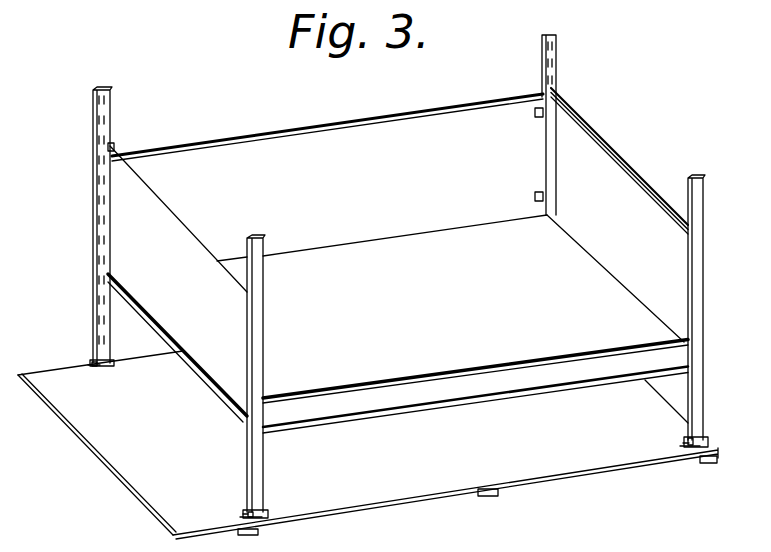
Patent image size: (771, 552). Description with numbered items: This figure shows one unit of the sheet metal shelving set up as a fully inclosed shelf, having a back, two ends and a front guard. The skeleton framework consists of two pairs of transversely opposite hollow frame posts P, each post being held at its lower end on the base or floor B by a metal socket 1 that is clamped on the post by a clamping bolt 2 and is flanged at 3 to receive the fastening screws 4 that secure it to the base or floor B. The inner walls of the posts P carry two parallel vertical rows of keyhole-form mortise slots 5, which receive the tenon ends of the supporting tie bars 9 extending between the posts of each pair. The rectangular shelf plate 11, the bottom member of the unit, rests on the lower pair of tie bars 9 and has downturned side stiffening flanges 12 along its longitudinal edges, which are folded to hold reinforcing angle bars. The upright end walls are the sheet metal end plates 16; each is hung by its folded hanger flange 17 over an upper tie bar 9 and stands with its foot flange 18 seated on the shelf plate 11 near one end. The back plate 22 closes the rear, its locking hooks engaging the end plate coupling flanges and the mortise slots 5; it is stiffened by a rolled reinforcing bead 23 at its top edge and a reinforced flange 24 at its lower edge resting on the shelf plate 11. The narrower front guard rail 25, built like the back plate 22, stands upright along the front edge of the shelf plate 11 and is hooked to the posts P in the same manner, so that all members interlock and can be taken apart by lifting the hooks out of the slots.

The metal socket 1 is at (112, 358).
The clamping bolt 2 is at (104, 369).
The flange 3 is at (91, 367).
The fastening screws 4 is at (246, 512).
The mortise slots 5 is at (98, 117).
The supporting tie bars 9 is at (600, 153).
The shelf plate 11 is at (539, 278).
The side stiffening flanges 12 is at (192, 383).
The end plates 16 is at (376, 283).
The hanger flange 17 is at (180, 220).
The foot flange 18 is at (576, 300).
The back plate 22 is at (382, 184).
The rolled reinforcing bead 23 is at (320, 130).
The reinforced flange 24 is at (354, 278).
The front guard rail 25 is at (475, 372).
The frame posts P is at (104, 82).
The base or floor B is at (368, 445).